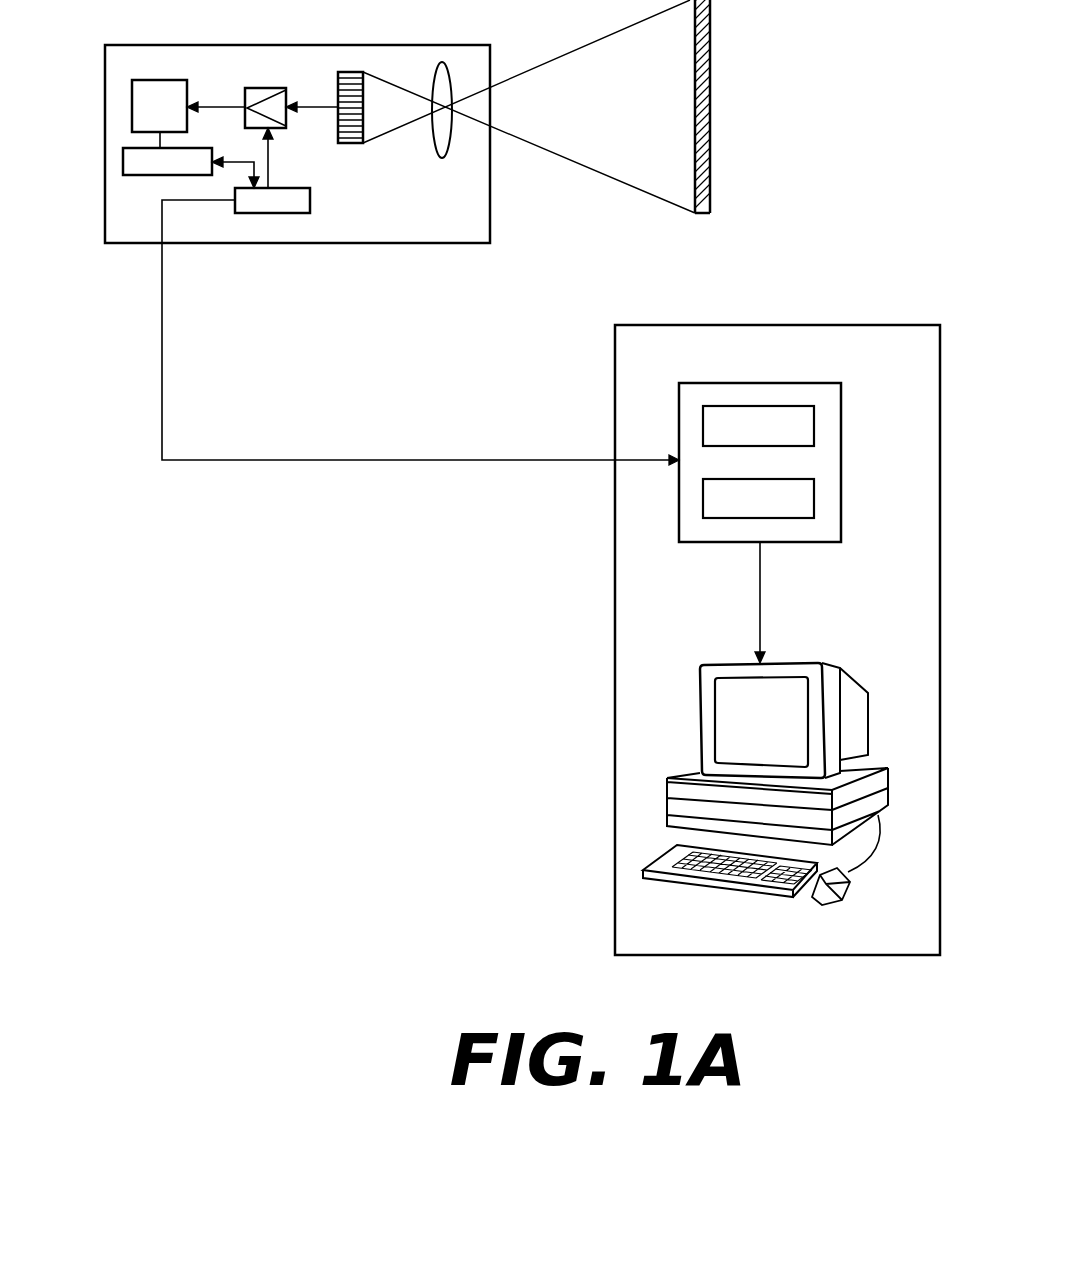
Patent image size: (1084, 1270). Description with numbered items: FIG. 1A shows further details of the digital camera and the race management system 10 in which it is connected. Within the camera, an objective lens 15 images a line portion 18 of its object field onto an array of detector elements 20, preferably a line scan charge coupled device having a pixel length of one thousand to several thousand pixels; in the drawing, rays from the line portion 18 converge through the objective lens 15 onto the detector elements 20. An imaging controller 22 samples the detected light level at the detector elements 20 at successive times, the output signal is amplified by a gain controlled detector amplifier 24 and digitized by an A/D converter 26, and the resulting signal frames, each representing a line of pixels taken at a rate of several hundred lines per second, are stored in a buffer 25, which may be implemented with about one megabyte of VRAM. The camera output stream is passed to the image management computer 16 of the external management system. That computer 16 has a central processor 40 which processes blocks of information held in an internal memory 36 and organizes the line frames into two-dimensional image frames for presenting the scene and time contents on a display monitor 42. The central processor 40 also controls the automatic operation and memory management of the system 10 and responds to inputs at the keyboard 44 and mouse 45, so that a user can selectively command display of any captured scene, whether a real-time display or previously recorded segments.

The race management system 10 is at (370, 620).
The objective lens 15 is at (441, 156).
The image management computer 16 is at (614, 718).
The line portion 18 is at (710, 44).
The array of detector elements 20 is at (346, 143).
The imaging controller 22 is at (310, 200).
The gain controlled detector amplifier 24 is at (258, 88).
The buffer 25 is at (172, 172).
The A/D converter 26 is at (155, 80).
The internal memory 36 is at (758, 498).
The central processor 40 is at (757, 406).
The display monitor 42 is at (777, 754).
The keyboard 44 is at (670, 855).
The mouse 45 is at (850, 896).